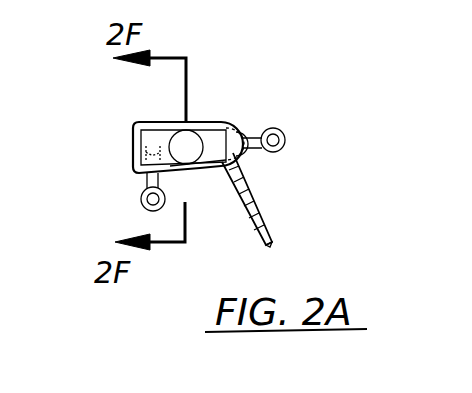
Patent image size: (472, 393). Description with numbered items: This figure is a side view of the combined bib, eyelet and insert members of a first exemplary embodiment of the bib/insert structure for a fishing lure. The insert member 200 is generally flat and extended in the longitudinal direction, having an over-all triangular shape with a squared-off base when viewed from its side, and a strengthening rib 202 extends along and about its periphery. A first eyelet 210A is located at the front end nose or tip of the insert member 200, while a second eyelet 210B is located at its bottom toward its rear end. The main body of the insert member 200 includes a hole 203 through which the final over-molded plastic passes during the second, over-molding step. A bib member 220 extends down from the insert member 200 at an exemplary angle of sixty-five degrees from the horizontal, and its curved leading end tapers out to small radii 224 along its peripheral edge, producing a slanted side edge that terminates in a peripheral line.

The insert member 200 is at (212, 112).
The strengthening rib 202 is at (155, 122).
The hole 203 is at (197, 141).
The first eyelet 210A is at (275, 127).
The second eyelet 210B is at (137, 203).
The bib member 220 is at (263, 210).
The small radii 224 is at (262, 248).